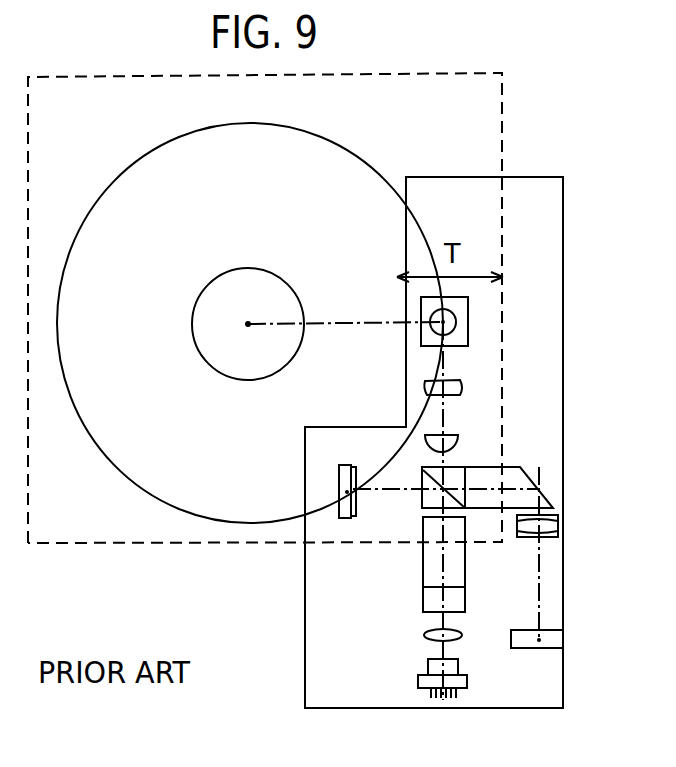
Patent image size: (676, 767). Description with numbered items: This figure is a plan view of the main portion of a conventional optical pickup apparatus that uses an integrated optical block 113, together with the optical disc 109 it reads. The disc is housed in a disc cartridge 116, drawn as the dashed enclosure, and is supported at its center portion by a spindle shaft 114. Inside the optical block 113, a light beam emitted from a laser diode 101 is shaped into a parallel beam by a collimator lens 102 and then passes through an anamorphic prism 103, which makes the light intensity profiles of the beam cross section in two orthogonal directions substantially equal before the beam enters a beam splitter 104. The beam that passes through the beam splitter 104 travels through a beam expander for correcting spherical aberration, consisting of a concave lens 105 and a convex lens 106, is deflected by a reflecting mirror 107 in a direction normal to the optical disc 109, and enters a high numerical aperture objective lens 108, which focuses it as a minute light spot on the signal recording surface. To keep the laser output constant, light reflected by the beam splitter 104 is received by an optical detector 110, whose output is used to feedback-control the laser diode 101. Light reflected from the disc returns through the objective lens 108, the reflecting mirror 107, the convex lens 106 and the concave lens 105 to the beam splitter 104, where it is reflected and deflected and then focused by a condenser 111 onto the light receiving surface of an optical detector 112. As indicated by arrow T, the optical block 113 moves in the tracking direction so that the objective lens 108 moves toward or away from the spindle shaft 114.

The laser diode 101 is at (467, 684).
The collimator lens 102 is at (425, 640).
The anamorphic prism 103 is at (428, 572).
The beam splitter 104 is at (520, 477).
The concave lens 105 is at (458, 440).
The convex lens 106 is at (462, 386).
The reflecting mirror 107 is at (460, 338).
The objective lens 108 is at (455, 317).
The optical disc 109 is at (340, 160).
The optical detector 110 is at (350, 493).
The condenser 111 is at (558, 537).
The optical detector 112 is at (557, 643).
The optical block 113 is at (323, 645).
The spindle shaft 114 is at (248, 324).
The disc cartridge 116 is at (115, 520).